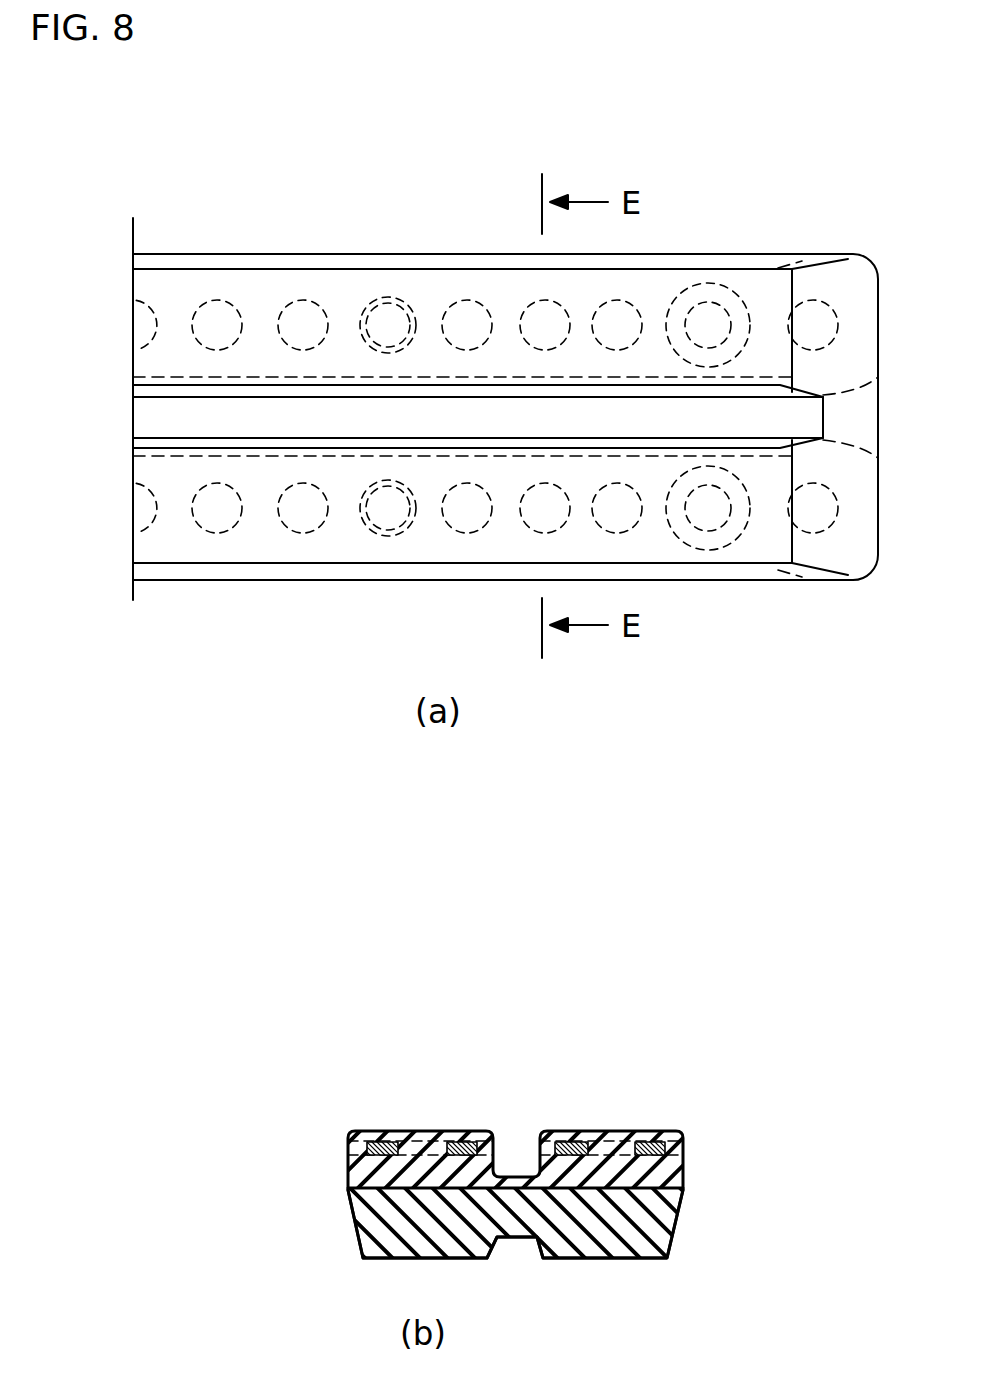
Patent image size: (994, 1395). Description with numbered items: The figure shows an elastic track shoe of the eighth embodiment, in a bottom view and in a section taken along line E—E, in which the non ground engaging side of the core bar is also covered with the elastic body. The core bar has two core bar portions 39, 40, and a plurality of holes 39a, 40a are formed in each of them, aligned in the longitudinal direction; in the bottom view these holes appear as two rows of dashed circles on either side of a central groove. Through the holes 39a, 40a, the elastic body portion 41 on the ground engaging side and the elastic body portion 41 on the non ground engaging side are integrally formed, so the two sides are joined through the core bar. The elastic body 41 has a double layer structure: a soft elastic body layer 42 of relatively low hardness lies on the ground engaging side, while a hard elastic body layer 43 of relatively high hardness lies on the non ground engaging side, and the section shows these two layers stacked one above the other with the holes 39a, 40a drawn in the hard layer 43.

The core bar portion 39 is at (653, 1135).
The holes 39a is at (537, 302).
The core bar portion 40 is at (470, 1142).
The holes 40a is at (448, 540).
The elastic body 41 is at (784, 1143).
The elastic body layer 42 is at (660, 1237).
The elastic body layer 43 is at (677, 1167).